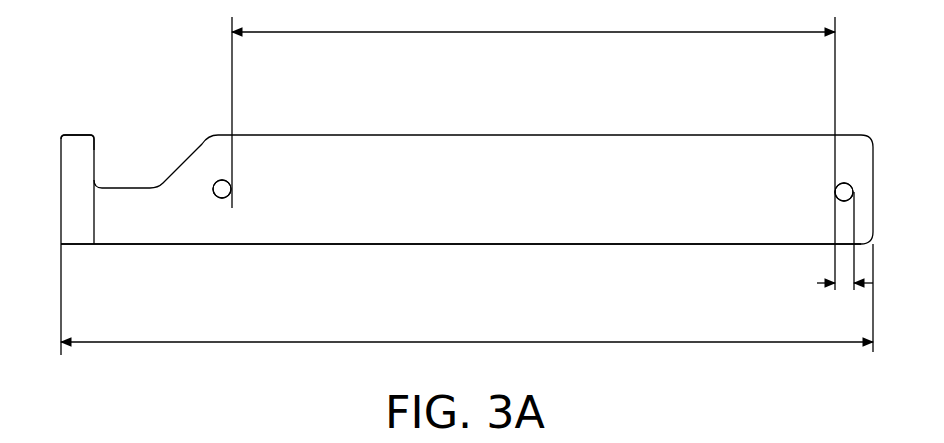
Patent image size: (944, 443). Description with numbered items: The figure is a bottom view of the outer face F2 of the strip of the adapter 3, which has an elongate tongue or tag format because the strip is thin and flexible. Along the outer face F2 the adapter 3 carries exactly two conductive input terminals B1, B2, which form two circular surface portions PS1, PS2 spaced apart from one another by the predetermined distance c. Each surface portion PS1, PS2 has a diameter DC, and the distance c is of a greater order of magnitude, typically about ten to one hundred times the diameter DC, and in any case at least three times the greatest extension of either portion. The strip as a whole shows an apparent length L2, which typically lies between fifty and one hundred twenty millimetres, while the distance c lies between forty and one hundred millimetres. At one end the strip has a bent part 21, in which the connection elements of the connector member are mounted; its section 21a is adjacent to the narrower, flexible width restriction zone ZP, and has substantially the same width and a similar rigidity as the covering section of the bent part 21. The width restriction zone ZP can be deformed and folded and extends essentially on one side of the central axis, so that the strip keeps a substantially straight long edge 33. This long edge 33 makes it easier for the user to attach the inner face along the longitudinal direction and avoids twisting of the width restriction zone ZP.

The adapter 3 is at (342, 132).
The bent part 21 is at (94, 215).
The other section 21a is at (72, 190).
The long edge 33 is at (185, 246).
The width restriction zone ZP is at (126, 208).
The first surface portion PS1 is at (217, 181).
The second surface portion PS2 is at (847, 187).
The first input terminal B1 is at (222, 190).
The second input terminal B2 is at (840, 197).
The outer face F2 is at (528, 225).
The predetermined distance c is at (533, 149).
The apparent length L2 is at (467, 309).
The diameter DC is at (845, 257).